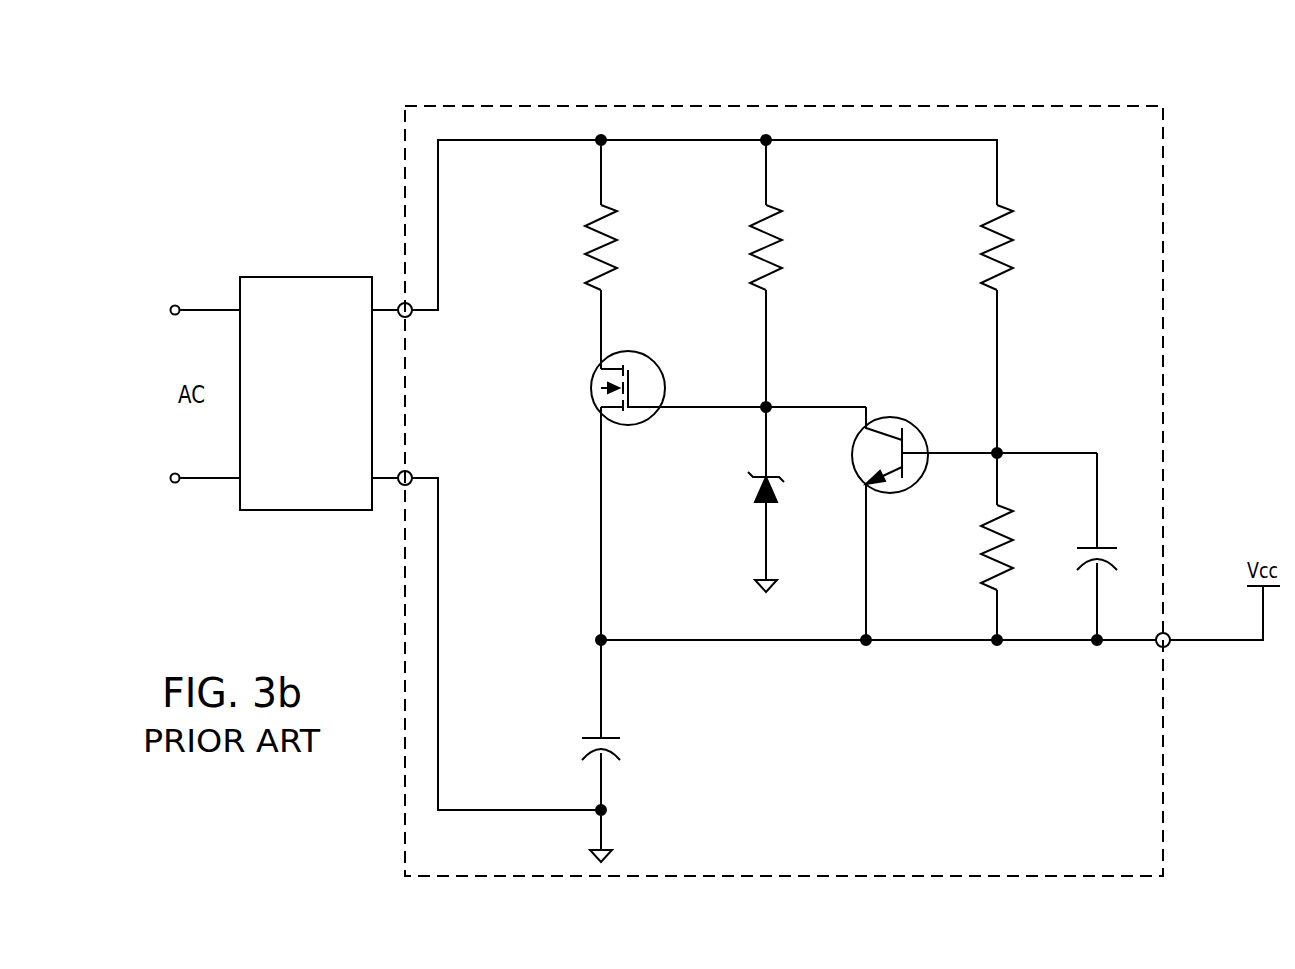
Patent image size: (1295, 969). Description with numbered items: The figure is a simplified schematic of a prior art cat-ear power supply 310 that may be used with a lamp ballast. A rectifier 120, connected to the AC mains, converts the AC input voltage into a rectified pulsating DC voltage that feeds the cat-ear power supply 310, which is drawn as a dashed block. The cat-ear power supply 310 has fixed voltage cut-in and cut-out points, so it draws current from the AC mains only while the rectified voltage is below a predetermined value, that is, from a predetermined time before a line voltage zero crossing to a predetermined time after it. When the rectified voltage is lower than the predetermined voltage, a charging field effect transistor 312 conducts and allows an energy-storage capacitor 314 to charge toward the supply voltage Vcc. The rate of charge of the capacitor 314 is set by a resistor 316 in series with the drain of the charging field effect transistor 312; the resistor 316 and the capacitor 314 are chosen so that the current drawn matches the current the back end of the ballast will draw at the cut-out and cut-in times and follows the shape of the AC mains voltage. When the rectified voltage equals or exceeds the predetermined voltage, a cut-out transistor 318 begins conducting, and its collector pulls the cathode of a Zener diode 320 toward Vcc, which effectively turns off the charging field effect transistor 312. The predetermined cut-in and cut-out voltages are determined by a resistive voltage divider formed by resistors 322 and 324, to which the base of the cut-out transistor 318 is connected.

The rectifier 120 is at (280, 293).
The cat-ear power supply 310 is at (829, 106).
The charging field effect transistor 312 is at (590, 395).
The energy-storage capacitor 314 is at (612, 738).
The resistor 316 is at (608, 248).
The cut-out transistor 318 is at (908, 421).
The Zener diode 320 is at (755, 493).
The resistor 322 is at (983, 225).
The resistor 324 is at (990, 520).